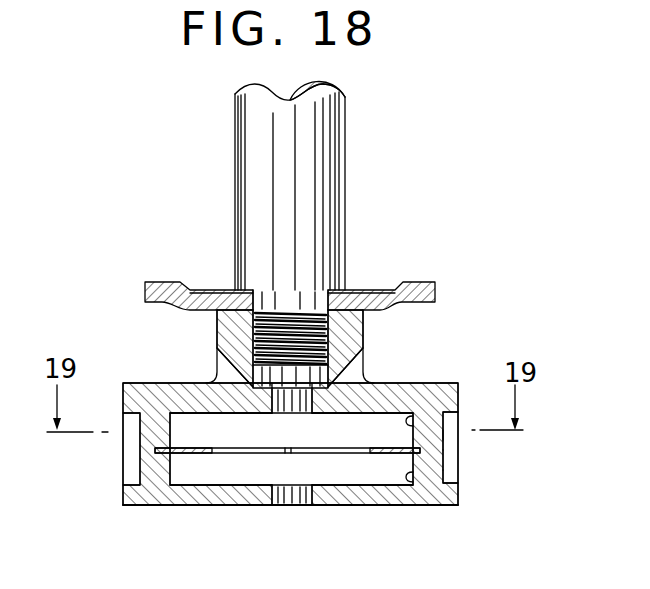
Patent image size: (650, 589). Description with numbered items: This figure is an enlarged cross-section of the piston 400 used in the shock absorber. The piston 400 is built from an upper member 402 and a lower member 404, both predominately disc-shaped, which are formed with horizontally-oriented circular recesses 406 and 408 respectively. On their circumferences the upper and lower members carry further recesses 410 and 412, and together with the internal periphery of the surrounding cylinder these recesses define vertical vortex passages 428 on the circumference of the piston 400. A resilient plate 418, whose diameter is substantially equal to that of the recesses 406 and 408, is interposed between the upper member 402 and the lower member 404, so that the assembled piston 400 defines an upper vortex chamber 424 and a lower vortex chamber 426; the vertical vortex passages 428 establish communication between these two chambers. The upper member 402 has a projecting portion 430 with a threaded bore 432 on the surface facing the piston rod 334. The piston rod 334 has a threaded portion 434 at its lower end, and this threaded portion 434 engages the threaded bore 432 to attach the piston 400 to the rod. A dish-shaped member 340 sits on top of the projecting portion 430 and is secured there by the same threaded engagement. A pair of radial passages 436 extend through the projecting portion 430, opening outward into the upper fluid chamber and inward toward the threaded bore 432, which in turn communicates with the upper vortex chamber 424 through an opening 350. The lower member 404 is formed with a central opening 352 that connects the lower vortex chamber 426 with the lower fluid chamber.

The piston rod 334 is at (322, 237).
The dish-shaped member 340 is at (152, 288).
The threaded portion 434 is at (240, 303).
The projecting portion 430 is at (235, 350).
The threaded bore 432 is at (330, 333).
The radial passages 436 is at (356, 372).
The piston 400 is at (128, 376).
The upper member 402 is at (440, 383).
The vertical vortex passages 428 is at (130, 426).
The upper vortex chamber 424 is at (187, 432).
The lower vortex chamber 426 is at (190, 470).
The resilient plate 418 is at (387, 455).
The opening 350 is at (283, 400).
The opening 352 is at (297, 500).
The circular recess 406 is at (455, 411).
The recess 410 is at (450, 440).
The recess 412 is at (452, 468).
The circular recess 408 is at (460, 482).
The lower member 404 is at (462, 505).